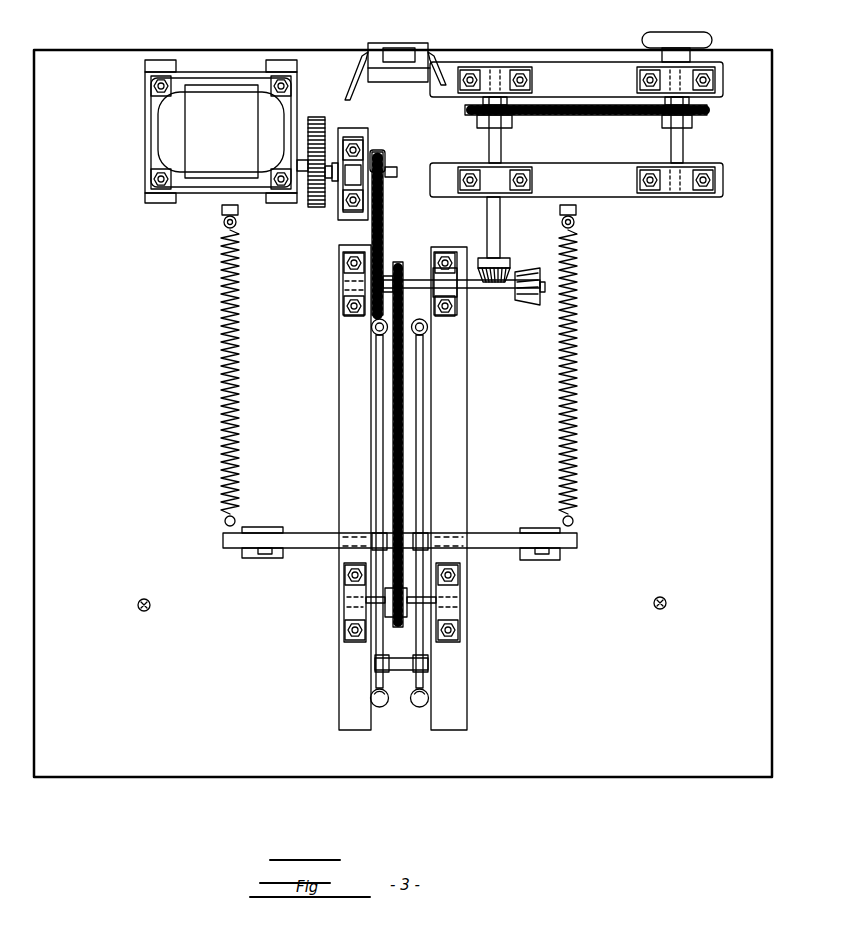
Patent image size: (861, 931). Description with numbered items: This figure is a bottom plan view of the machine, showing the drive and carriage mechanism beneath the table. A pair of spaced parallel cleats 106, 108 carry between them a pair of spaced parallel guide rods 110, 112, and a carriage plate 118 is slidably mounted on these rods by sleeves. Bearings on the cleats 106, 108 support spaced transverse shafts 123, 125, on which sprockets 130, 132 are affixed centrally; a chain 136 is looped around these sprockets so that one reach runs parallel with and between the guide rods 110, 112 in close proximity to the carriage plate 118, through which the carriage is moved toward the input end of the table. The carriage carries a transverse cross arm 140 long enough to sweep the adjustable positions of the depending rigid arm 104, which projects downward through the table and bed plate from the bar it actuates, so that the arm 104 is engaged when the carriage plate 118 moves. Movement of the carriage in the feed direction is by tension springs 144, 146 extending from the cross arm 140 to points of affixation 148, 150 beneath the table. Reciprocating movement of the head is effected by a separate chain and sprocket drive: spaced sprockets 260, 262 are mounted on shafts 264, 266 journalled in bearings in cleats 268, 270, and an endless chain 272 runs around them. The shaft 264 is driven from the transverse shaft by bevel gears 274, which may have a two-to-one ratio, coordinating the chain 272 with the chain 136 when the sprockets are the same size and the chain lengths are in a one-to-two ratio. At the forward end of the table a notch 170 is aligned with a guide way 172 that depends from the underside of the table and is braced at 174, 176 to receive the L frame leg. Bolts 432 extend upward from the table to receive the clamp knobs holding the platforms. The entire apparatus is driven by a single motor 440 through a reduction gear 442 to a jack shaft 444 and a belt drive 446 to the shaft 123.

The rigid arm 104 is at (263, 558).
The cleat 106 is at (450, 448).
The cleat 108 is at (350, 406).
The guide rod 110 is at (420, 385).
The guide rod 112 is at (378, 352).
The carriage plate 118 is at (402, 660).
The transverse shaft 123 is at (418, 280).
The transverse shaft 125 is at (440, 600).
The sprocket 130 is at (399, 258).
The sprocket 132 is at (395, 614).
The chain 136 is at (398, 440).
The transverse cross arm 140 is at (484, 533).
The tension spring 144 is at (578, 440).
The tension spring 146 is at (222, 440).
The point of affixation 148 is at (572, 214).
The point of affixation 150 is at (222, 214).
The notch 170 is at (440, 56).
The guide way 172 is at (400, 45).
The brace 174 is at (444, 64).
The brace 176 is at (352, 62).
The sprocket 260 is at (478, 117).
The sprocket 262 is at (706, 112).
The shaft 264 is at (500, 146).
The shaft 266 is at (683, 146).
The cleat 268 is at (612, 182).
The cleat 270 is at (576, 68).
The endless chain 272 is at (603, 118).
The bevel gears 274 is at (520, 300).
The bolt 432 is at (149, 610).
The motor 440 is at (205, 178).
The reduction gear 442 is at (312, 117).
The jack shaft 444 is at (393, 165).
The belt drive 446 is at (380, 150).